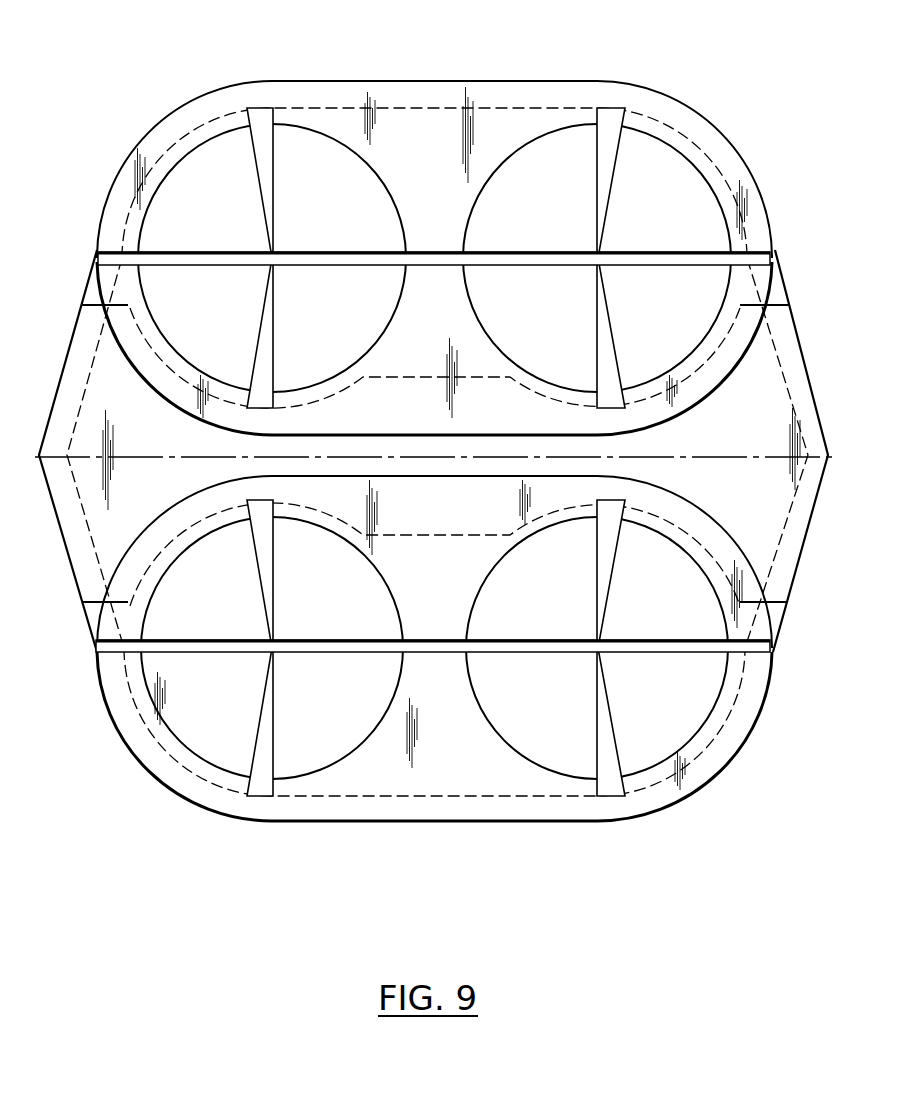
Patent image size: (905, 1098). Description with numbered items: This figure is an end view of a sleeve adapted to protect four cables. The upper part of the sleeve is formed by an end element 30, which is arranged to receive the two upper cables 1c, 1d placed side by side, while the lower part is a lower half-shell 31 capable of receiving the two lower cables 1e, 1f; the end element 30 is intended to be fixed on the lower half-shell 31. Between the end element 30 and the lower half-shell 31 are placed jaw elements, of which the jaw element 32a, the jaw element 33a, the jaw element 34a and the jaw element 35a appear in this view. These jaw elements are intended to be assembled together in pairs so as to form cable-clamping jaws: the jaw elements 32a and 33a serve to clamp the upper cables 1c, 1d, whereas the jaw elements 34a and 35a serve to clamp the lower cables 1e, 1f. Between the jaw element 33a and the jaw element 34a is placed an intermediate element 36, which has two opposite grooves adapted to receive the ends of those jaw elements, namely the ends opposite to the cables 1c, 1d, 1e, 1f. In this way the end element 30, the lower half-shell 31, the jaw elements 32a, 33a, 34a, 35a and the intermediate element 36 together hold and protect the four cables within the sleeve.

The end element 30 is at (592, 75).
The lower half-shell 31 is at (407, 825).
The jaw element 32a is at (471, 108).
The jaw element 33a is at (672, 417).
The jaw element 34a is at (687, 495).
The jaw element 35a is at (490, 796).
The intermediate element 36 is at (385, 375).
The cable 1c is at (307, 167).
The cable 1d is at (658, 180).
The cable 1e is at (303, 742).
The cable 1f is at (654, 735).